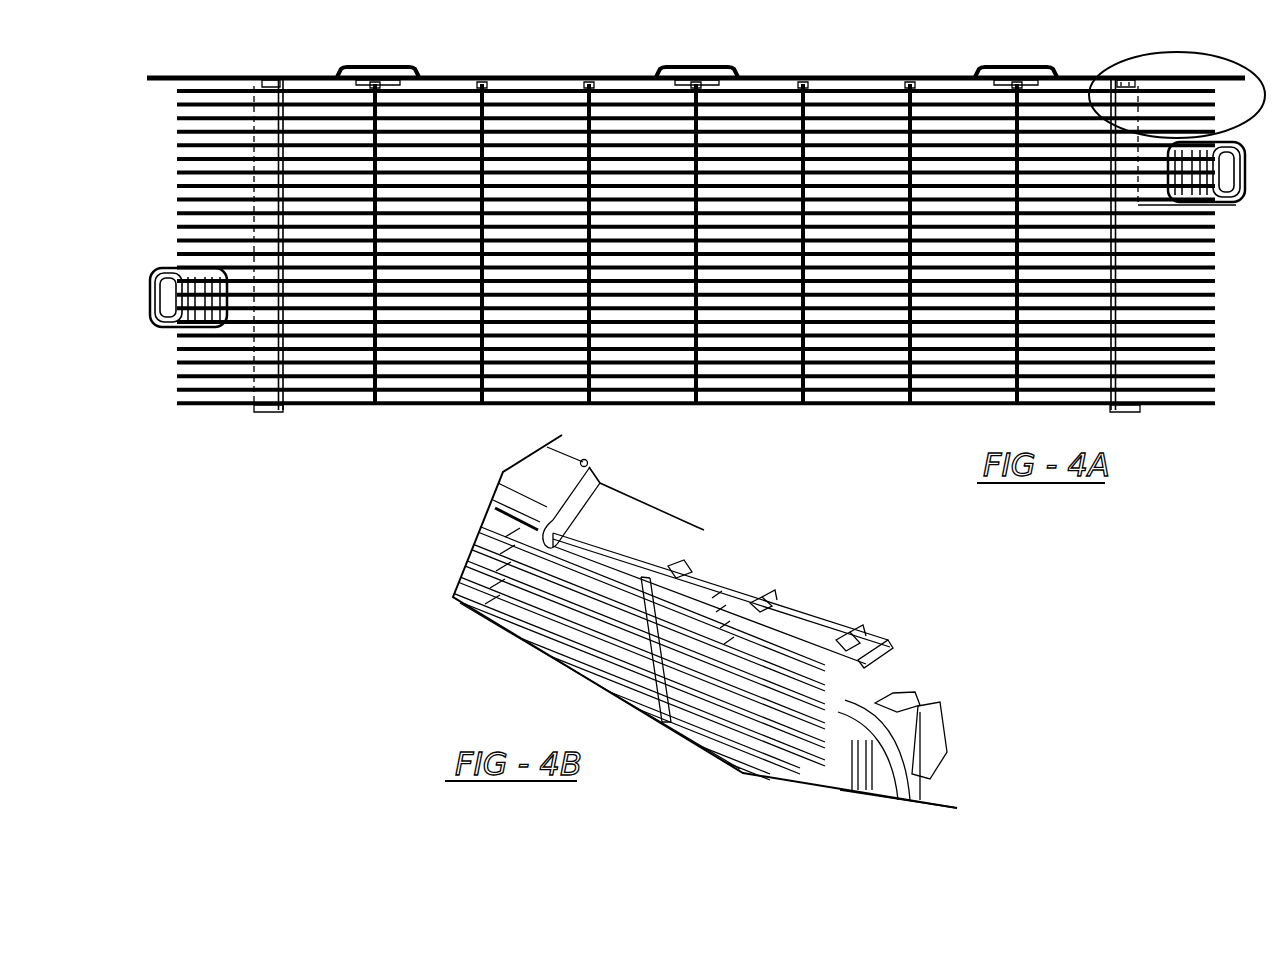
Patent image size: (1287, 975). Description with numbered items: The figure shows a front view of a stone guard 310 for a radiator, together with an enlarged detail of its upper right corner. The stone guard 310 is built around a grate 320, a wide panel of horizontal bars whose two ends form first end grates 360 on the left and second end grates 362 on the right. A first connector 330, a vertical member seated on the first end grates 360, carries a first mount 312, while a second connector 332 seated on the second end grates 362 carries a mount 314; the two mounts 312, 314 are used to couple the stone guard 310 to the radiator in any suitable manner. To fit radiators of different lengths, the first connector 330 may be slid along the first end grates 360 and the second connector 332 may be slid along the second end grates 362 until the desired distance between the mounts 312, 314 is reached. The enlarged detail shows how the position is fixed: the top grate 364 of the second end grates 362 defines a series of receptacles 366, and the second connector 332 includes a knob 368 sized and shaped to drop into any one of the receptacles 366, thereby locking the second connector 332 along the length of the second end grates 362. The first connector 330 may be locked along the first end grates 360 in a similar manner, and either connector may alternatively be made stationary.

In FIG. 4A, the stone guard 310 is at (577, 56).
In FIG. 4B, the stone guard 310 is at (424, 581).
In FIG. 4A, the grate 320 is at (830, 76).
In FIG. 4B, the grate 320 is at (598, 497).
In FIG. 4A, the first end grates 360 is at (178, 190).
In FIG. 4B, the first end grates 360 is at (639, 653).
In FIG. 4A, the second end grates 362 is at (1216, 320).
In FIG. 4B, the second end grates 362 is at (845, 707).
In FIG. 4B, the top grate 364 is at (886, 636).
In FIG. 4B, the receptacles 366 is at (764, 600).
In FIG. 4A, the knob 368 is at (1130, 83).
In FIG. 4B, the knob 368 is at (682, 568).
In FIG. 4A, the first mount 312 is at (152, 308).
In FIG. 4A, the mount 314 is at (1243, 203).
In FIG. 4A, the first connector 330 is at (280, 411).
In FIG. 4A, the second connector 332 is at (1117, 411).